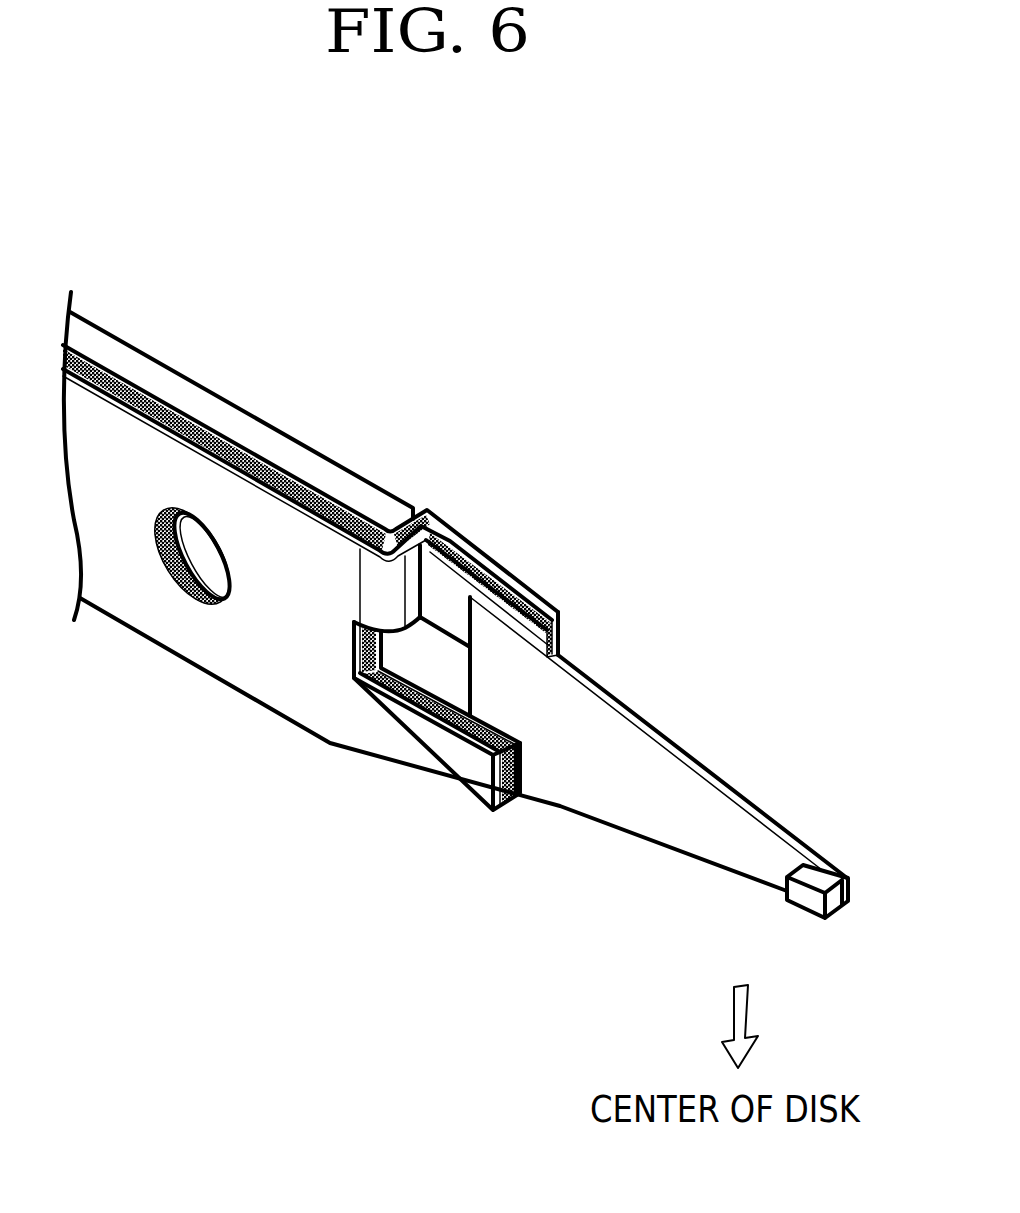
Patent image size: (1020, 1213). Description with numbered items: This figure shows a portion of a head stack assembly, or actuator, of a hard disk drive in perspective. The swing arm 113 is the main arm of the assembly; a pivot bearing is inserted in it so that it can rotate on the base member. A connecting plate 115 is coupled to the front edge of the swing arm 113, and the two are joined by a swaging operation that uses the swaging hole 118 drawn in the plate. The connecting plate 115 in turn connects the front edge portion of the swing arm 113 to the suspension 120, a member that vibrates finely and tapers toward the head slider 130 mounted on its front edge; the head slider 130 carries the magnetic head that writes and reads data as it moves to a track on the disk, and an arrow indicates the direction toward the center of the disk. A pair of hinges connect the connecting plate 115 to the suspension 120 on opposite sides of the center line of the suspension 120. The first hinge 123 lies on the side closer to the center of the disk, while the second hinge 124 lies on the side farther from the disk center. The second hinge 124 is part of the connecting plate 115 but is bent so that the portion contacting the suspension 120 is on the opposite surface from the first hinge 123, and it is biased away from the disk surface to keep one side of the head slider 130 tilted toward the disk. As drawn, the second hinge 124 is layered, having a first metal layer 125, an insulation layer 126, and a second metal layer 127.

The swing arm 113 is at (321, 472).
The connecting plate 115 is at (258, 677).
The swaging hole 118 is at (168, 591).
The suspension 120 is at (625, 810).
The first hinge 123 is at (422, 769).
The second hinge 124 is at (441, 587).
The first metal layer 125 is at (283, 468).
The insulation layer 126 is at (249, 452).
The second metal layer 127 is at (197, 424).
The head slider 130 is at (803, 898).